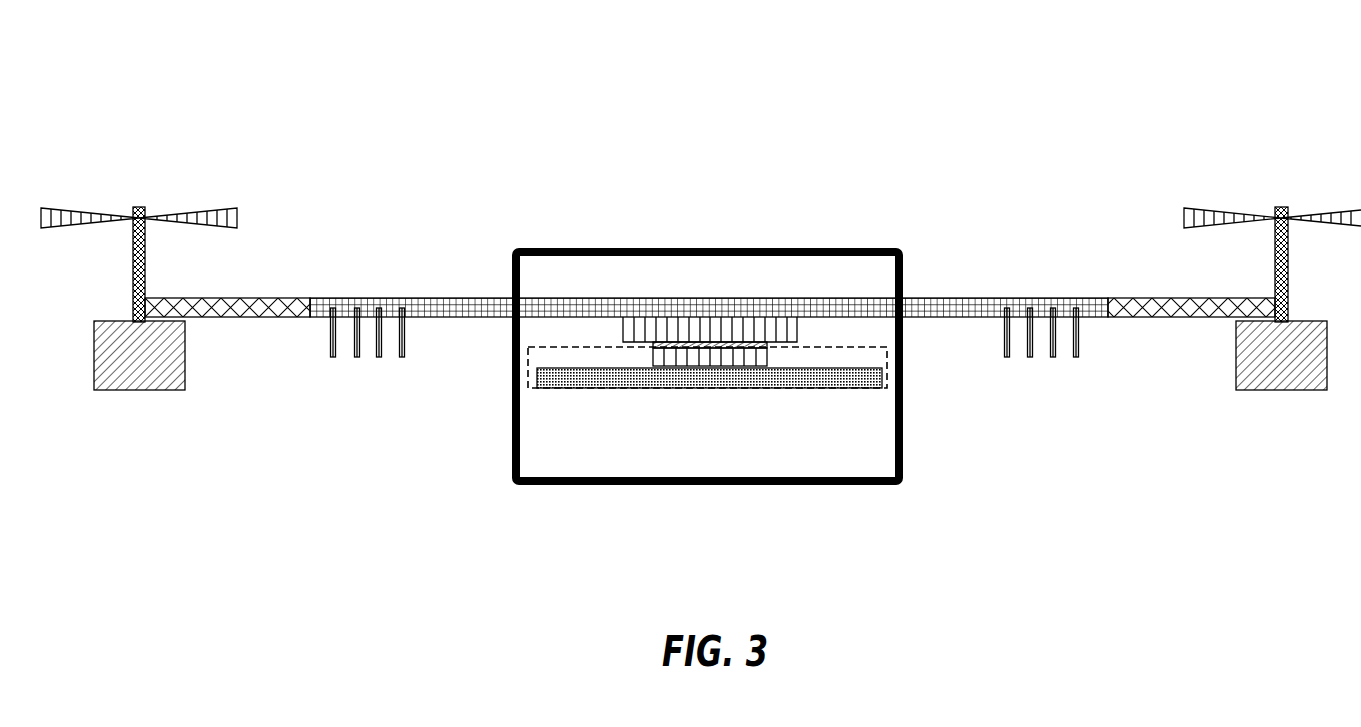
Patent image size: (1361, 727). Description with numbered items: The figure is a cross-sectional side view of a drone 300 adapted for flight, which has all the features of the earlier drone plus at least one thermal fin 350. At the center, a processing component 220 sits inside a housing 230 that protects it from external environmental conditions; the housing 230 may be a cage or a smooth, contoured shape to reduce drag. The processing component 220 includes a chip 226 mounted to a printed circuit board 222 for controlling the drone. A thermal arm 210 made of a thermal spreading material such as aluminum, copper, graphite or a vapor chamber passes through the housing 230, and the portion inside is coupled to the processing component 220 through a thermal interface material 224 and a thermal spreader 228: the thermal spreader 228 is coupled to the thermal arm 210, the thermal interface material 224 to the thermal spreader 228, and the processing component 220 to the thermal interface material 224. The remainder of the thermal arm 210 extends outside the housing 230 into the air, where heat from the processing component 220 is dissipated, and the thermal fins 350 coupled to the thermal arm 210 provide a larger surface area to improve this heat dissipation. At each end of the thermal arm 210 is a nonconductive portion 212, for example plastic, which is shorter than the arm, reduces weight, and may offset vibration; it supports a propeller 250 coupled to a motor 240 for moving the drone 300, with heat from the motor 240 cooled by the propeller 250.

The drone 300 is at (1021, 105).
The housing 230 is at (713, 248).
The nonconductive portion 212 is at (293, 300).
The thermal arm 210 is at (416, 300).
The thermal fin 350 is at (357, 358).
The propeller 250 is at (140, 207).
The motor 240 is at (130, 386).
The thermal spreader 228 is at (785, 327).
The chip 226 is at (767, 353).
The thermal interface material 224 is at (630, 346).
The processing component 220 is at (815, 390).
The printed circuit board 222 is at (540, 387).